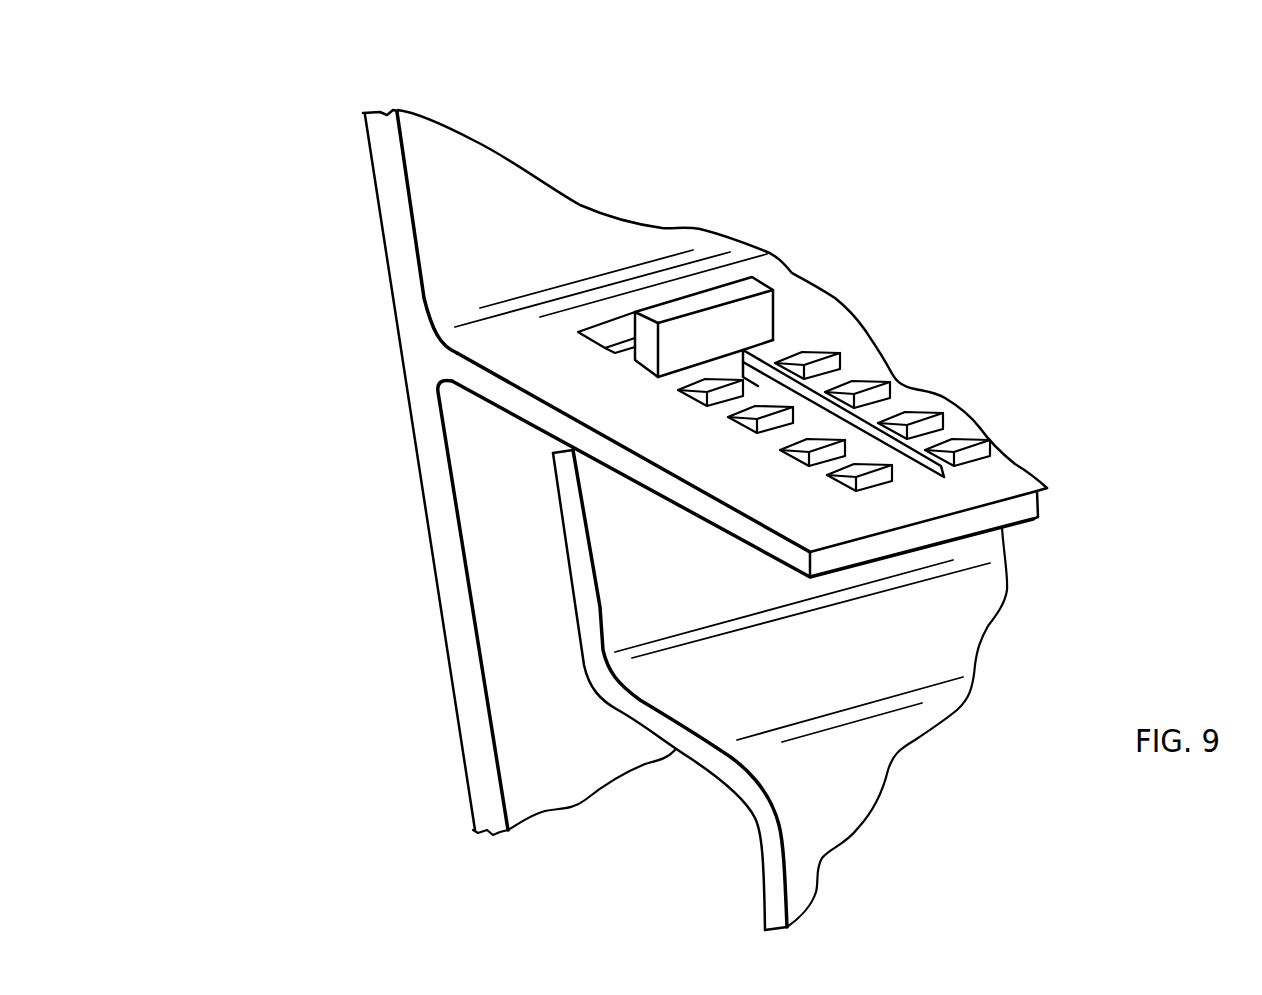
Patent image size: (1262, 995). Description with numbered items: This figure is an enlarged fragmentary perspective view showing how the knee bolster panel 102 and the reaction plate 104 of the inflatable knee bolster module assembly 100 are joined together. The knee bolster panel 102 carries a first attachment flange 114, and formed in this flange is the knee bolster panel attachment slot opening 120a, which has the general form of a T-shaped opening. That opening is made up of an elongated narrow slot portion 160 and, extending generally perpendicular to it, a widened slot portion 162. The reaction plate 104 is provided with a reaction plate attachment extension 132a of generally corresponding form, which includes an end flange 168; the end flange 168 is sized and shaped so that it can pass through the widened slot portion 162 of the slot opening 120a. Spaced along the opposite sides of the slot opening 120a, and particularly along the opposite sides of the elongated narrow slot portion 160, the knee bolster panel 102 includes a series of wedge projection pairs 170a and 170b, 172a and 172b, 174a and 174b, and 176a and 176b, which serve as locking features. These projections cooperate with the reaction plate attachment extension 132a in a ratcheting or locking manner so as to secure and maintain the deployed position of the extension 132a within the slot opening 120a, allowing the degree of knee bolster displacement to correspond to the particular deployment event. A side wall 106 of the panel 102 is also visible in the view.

The inflatable knee bolster module assembly 100 is at (674, 168).
The knee bolster panel 102 is at (363, 310).
The reaction plate 104 is at (862, 772).
The side wall 106 is at (463, 641).
The first attachment flange 114 is at (557, 383).
The knee bolster panel attachment slot opening 120a is at (599, 324).
The reaction plate attachment extension 132a is at (754, 318).
The elongated narrow slot portion 160 is at (954, 483).
The widened slot portion 162 is at (622, 308).
The end flange 168 is at (707, 322).
The wedge projection 170a is at (855, 480).
The wedge projection 170b is at (988, 443).
The wedge projection 172a is at (801, 451).
The wedge projection 172b is at (942, 414).
The wedge projection 174a is at (752, 422).
The wedge projection 174b is at (896, 384).
The wedge projection 176a is at (702, 392).
The wedge projection 176b is at (842, 358).